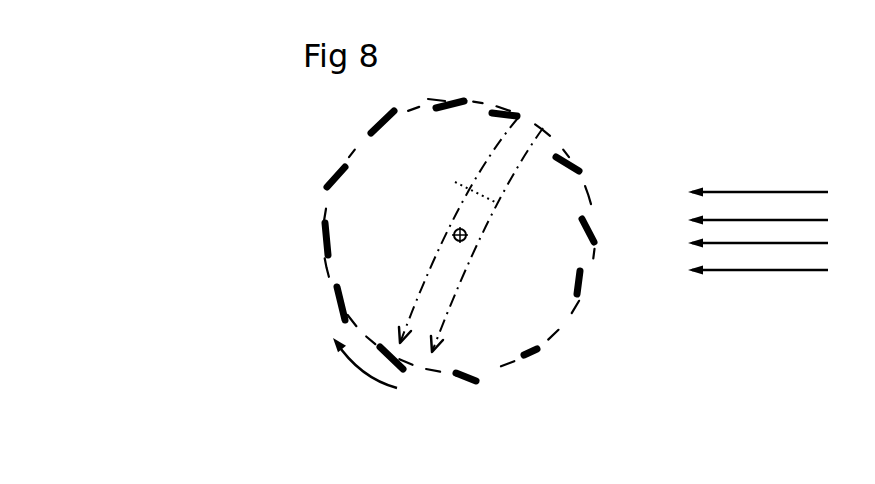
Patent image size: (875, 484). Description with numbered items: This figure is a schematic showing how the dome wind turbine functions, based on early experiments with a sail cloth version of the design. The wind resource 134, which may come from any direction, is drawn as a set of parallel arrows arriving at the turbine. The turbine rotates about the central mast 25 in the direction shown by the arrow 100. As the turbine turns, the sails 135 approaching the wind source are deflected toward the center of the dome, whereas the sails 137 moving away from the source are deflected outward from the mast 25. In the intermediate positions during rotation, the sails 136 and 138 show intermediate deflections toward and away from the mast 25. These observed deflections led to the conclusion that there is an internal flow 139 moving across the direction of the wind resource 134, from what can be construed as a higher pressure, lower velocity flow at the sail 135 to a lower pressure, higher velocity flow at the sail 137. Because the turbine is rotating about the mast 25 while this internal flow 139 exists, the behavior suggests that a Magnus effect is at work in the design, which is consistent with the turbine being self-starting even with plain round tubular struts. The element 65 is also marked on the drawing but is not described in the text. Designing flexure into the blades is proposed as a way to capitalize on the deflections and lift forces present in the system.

The mast 25 is at (463, 238).
The blade segment 65 is at (392, 113).
The arrow 100 is at (372, 384).
The wind resource 134 is at (758, 213).
The sails 135 is at (462, 99).
The sails 136 is at (584, 226).
The sails 137 is at (480, 366).
The sails 138 is at (326, 248).
The internal flow 139 is at (462, 180).